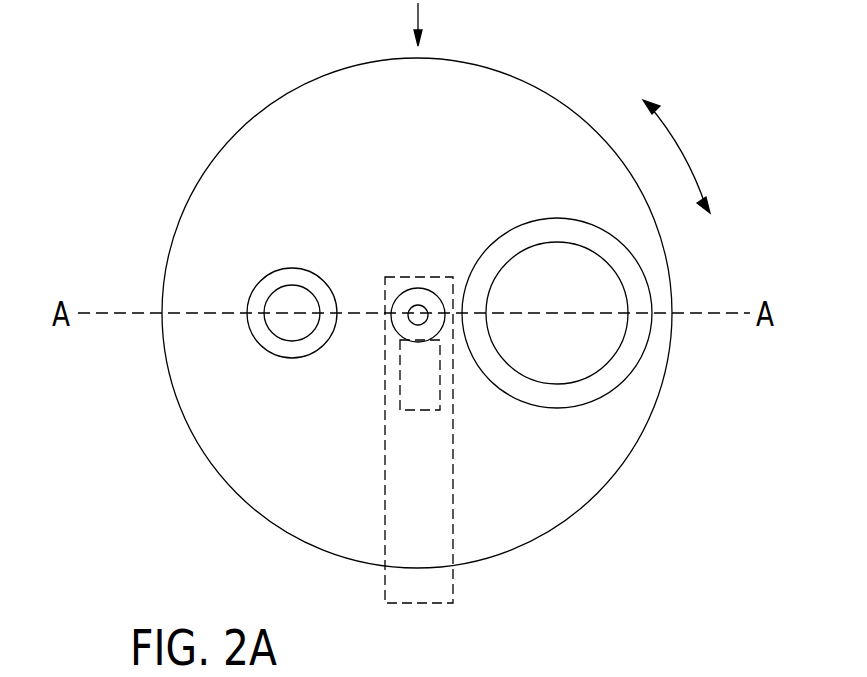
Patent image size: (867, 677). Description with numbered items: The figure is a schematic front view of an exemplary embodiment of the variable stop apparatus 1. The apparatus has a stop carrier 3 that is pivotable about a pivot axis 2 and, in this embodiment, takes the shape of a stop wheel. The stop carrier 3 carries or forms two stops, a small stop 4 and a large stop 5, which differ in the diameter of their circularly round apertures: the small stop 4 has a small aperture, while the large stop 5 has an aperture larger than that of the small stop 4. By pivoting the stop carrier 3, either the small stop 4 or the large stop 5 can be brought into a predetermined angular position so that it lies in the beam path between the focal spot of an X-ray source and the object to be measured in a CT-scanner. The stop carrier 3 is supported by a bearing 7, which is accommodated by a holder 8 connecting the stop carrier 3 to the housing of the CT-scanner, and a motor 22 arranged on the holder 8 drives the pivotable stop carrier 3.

The variable stop apparatus 1 is at (177, 75).
The pivot axis 2 is at (418, 315).
The stop carrier 3 is at (486, 88).
The small stop 4 is at (267, 333).
The large stop 5 is at (607, 363).
The bearing 7 is at (441, 339).
The holder 8 is at (385, 432).
The motor 22 is at (432, 410).